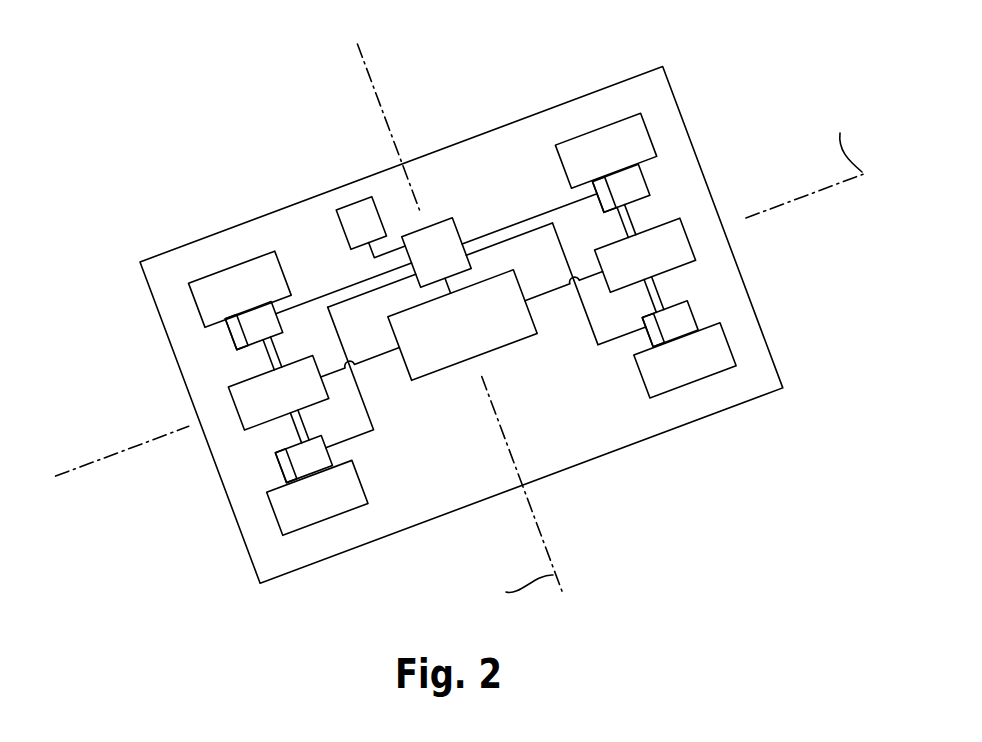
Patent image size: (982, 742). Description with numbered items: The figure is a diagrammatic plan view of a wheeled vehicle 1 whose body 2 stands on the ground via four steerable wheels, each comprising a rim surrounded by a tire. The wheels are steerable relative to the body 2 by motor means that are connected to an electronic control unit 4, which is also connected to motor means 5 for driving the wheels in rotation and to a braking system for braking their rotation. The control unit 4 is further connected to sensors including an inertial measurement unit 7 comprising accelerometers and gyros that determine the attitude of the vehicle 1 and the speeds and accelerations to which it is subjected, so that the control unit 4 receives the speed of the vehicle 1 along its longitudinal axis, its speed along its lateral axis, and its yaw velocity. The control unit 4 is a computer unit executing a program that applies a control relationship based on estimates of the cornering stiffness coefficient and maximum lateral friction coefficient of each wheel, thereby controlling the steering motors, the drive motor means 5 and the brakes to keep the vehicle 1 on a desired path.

The vehicle 1 is at (431, 106).
The body 2 is at (506, 122).
The electronic control unit 4 is at (439, 260).
The motor means 5 is at (462, 325).
The inertial measurement unit 7 is at (370, 228).